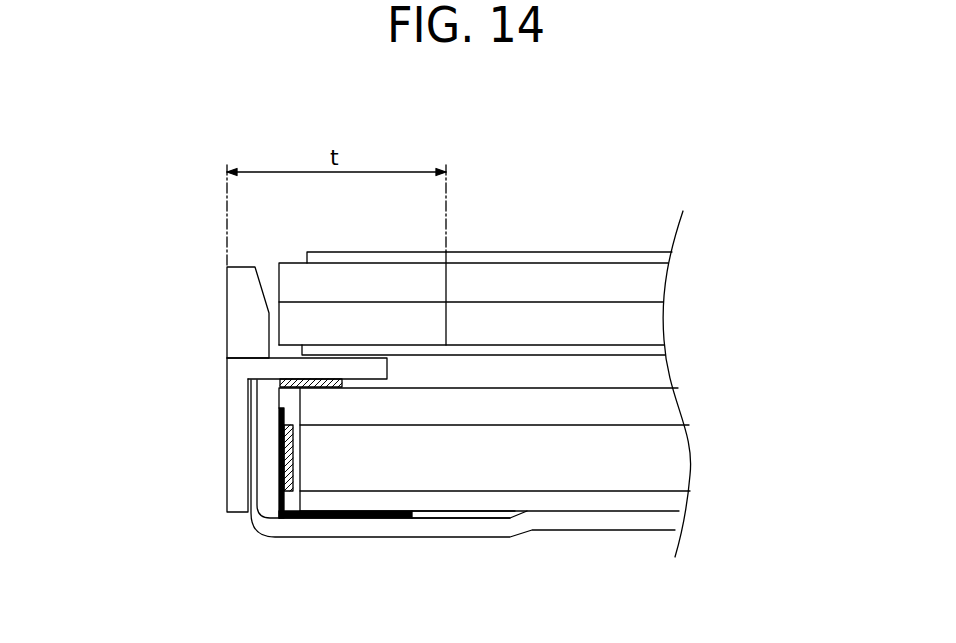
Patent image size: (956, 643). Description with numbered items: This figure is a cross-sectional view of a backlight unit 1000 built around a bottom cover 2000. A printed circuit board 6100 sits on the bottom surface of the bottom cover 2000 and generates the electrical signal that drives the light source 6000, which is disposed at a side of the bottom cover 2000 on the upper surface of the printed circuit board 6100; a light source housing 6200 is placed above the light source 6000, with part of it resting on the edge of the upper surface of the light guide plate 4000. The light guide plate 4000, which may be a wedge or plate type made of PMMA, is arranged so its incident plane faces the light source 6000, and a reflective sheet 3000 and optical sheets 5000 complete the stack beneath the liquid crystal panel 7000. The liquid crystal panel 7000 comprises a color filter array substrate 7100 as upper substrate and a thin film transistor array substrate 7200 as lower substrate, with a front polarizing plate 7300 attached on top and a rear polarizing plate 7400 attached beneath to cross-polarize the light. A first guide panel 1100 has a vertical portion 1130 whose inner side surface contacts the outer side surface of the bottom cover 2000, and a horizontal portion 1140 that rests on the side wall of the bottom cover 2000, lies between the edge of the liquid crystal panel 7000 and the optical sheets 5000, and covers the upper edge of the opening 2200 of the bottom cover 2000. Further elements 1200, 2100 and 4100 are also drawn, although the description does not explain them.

The backlight unit 1000 is at (157, 98).
The first guide panel 1100 is at (218, 422).
The vertical portion 1130 is at (228, 406).
The horizontal portion 1140 is at (287, 365).
The window/bezel member 1200 is at (227, 303).
The bottom cover 2000 is at (315, 538).
The frame bottom portion 2100 is at (488, 512).
The opening 2200 is at (590, 372).
The reflective sheet 3000 is at (689, 498).
The light guide plate 4000 is at (688, 460).
The side sealing member 4100 is at (300, 441).
The optical sheets 5000 is at (676, 408).
The light source 6000 is at (281, 407).
The printed circuit board 6100 is at (381, 519).
The light source housing 6200 is at (328, 378).
The liquid crystal panel 7000 is at (562, 306).
The color filter array substrate 7100 is at (657, 284).
The thin film transistor array substrate 7200 is at (653, 327).
The front polarizing plate 7300 is at (667, 255).
The rear polarizing plate 7400 is at (662, 350).